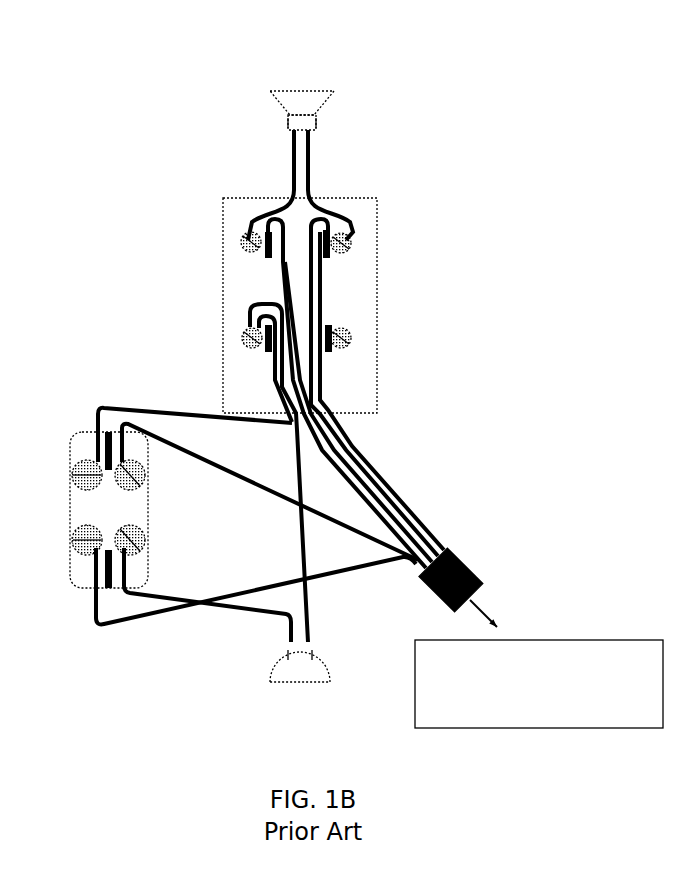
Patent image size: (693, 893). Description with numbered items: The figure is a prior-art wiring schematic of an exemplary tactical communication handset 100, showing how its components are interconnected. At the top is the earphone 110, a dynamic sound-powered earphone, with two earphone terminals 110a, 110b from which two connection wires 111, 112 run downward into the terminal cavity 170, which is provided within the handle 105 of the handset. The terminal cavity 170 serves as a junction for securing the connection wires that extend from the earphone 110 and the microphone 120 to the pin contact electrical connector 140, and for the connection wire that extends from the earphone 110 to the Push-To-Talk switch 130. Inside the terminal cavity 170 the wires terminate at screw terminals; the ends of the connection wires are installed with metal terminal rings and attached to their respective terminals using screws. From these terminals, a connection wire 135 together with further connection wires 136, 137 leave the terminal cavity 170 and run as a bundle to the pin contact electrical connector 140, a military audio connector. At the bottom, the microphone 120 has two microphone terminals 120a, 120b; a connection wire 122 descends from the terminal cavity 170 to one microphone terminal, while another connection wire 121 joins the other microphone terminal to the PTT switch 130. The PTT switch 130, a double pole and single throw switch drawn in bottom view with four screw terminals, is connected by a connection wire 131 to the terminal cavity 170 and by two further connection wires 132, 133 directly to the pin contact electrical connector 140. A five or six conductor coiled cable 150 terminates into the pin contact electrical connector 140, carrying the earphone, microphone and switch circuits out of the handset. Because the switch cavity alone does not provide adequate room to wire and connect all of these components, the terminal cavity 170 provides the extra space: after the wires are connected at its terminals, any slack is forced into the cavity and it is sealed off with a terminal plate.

The tactical communication handset 100 is at (122, 101).
The handle 105 is at (141, 176).
The earphone 110 is at (302, 90).
The earphone terminal a 110a is at (338, 127).
The earphone terminal b 110b is at (259, 127).
The earphone wire 111 is at (330, 185).
The earphone wire 112 is at (271, 185).
The microphone 120 is at (300, 689).
The microphone terminal a 120a is at (258, 646).
The microphone terminal b 120b is at (344, 646).
The microphone wire 121 is at (163, 590).
The microphone wire 122 is at (298, 541).
The Push-To-Talk (PTT) switch 130 is at (146, 510).
The PTT switch wire 131 is at (141, 404).
The PTT switch wire 132 is at (132, 628).
The PTT switch wire 133 is at (260, 472).
The terminal wire 135 is at (283, 265).
The terminal wire 136 is at (356, 450).
The terminal wire 137 is at (356, 487).
The pin contact electrical connector 140 is at (539, 638).
The coiled cable 150 is at (483, 613).
The terminal cavity 170 is at (338, 297).